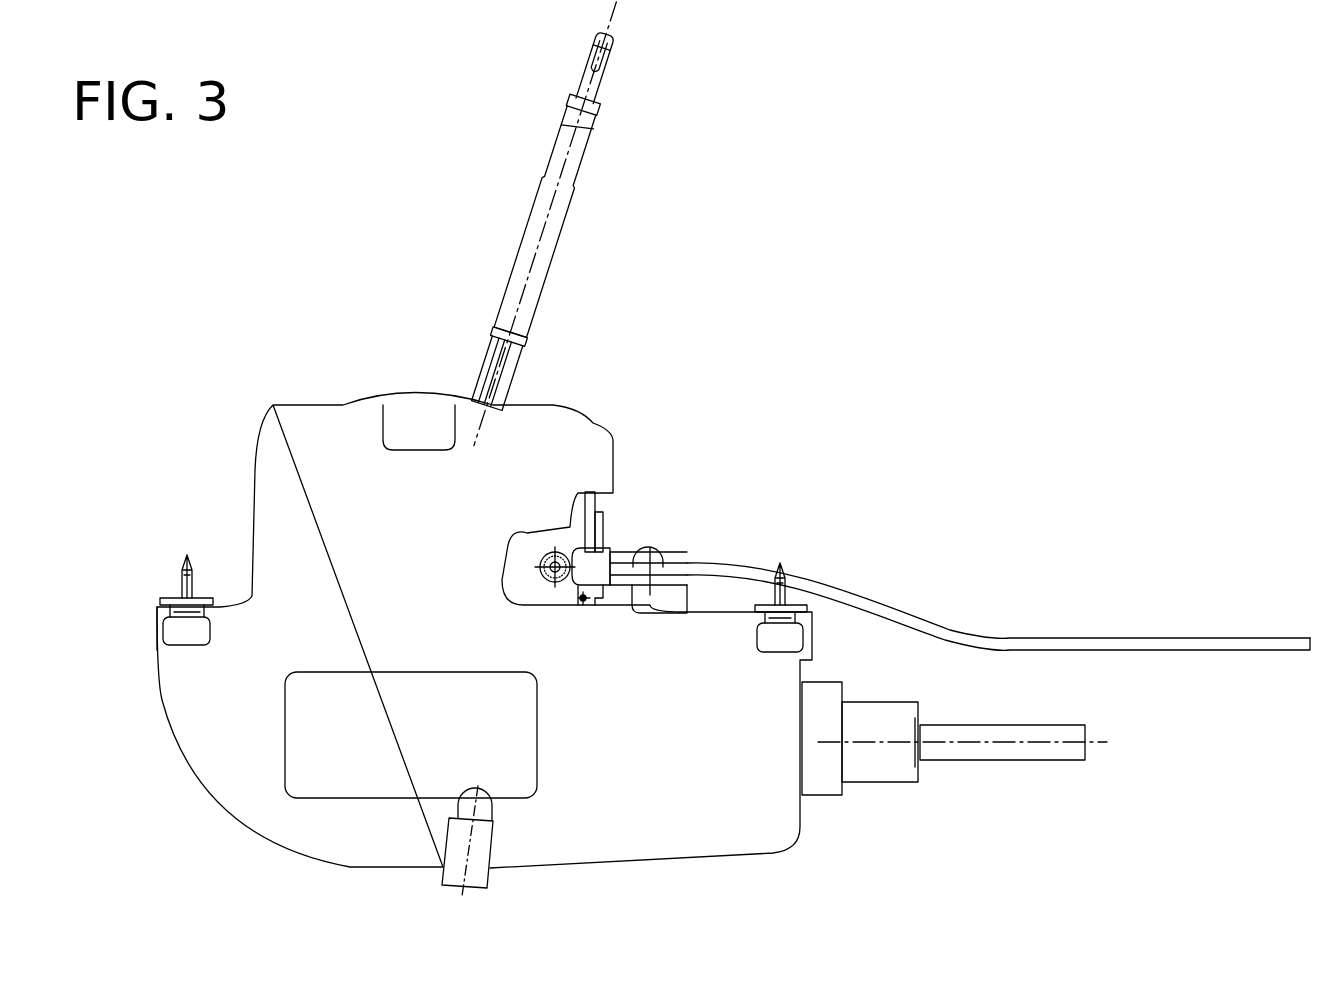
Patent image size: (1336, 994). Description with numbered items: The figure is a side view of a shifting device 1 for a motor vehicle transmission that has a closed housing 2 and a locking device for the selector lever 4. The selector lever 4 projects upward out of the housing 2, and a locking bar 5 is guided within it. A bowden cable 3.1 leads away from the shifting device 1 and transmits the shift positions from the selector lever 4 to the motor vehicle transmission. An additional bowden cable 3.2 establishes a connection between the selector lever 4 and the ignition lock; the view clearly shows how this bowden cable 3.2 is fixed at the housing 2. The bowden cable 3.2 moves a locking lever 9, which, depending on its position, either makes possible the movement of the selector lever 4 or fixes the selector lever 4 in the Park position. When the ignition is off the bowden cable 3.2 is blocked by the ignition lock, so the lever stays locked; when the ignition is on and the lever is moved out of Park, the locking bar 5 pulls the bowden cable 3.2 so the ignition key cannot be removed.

The shifting device 1 is at (810, 123).
The housing 2 is at (600, 447).
The bowden cable 3.1 is at (992, 746).
The bowden cable 3.2 is at (1118, 636).
The selector lever 4 is at (578, 167).
The locking bar 5 is at (616, 49).
The locking lever 9 is at (547, 544).